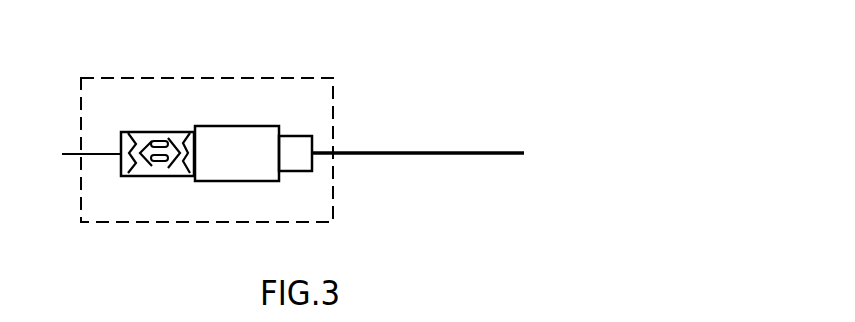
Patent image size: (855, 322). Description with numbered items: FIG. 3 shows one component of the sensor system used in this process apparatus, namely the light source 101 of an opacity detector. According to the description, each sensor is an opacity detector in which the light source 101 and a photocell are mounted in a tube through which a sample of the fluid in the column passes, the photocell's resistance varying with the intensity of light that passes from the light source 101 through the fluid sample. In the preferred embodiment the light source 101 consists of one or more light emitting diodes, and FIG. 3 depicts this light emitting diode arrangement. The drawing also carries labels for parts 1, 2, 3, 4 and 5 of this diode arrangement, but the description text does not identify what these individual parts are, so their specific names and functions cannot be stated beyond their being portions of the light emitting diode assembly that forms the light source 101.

The optical module body 1 is at (244, 126).
The optical element assembly 2 is at (185, 131).
The input lead 3 is at (82, 154).
The connector ferrule 4 is at (298, 172).
The optical fiber 5 is at (394, 152).
The light source 101 is at (208, 78).